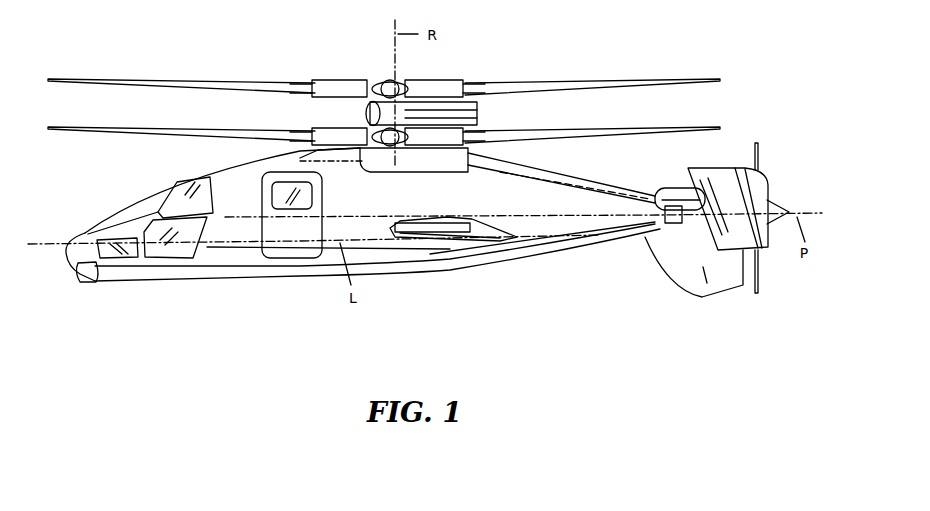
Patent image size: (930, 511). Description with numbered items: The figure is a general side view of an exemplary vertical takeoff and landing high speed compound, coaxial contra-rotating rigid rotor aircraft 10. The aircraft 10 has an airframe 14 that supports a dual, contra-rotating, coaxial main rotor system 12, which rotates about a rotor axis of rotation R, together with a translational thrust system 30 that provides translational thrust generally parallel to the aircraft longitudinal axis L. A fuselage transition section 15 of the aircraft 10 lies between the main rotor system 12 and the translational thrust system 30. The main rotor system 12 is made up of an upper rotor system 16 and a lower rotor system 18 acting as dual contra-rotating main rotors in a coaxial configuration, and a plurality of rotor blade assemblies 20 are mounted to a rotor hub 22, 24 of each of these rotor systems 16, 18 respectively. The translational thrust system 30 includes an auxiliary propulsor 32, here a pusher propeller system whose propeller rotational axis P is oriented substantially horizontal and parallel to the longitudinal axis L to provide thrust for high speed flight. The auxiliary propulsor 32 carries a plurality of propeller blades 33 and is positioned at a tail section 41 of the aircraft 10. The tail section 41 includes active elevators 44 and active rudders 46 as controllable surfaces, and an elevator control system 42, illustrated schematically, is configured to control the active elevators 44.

The rotary wing aircraft 10 is at (150, 53).
The main rotor system 12 is at (446, 58).
The airframe 14 is at (93, 237).
The fuselage transition section 15 is at (519, 275).
The upper rotor system 16 is at (362, 78).
The lower rotor system 18 is at (362, 129).
The rotor blade assemblies 20 is at (606, 82).
The rotor hub 22 is at (381, 82).
The rotor hub 24 is at (372, 131).
The translational thrust system 30 is at (760, 128).
The auxiliary propulsor 32 is at (757, 283).
The propeller blades 33 is at (758, 160).
The tail section 41 is at (665, 305).
The elevator control system 42 is at (665, 222).
The active elevators 44 is at (683, 191).
The active rudders 46 is at (731, 247).